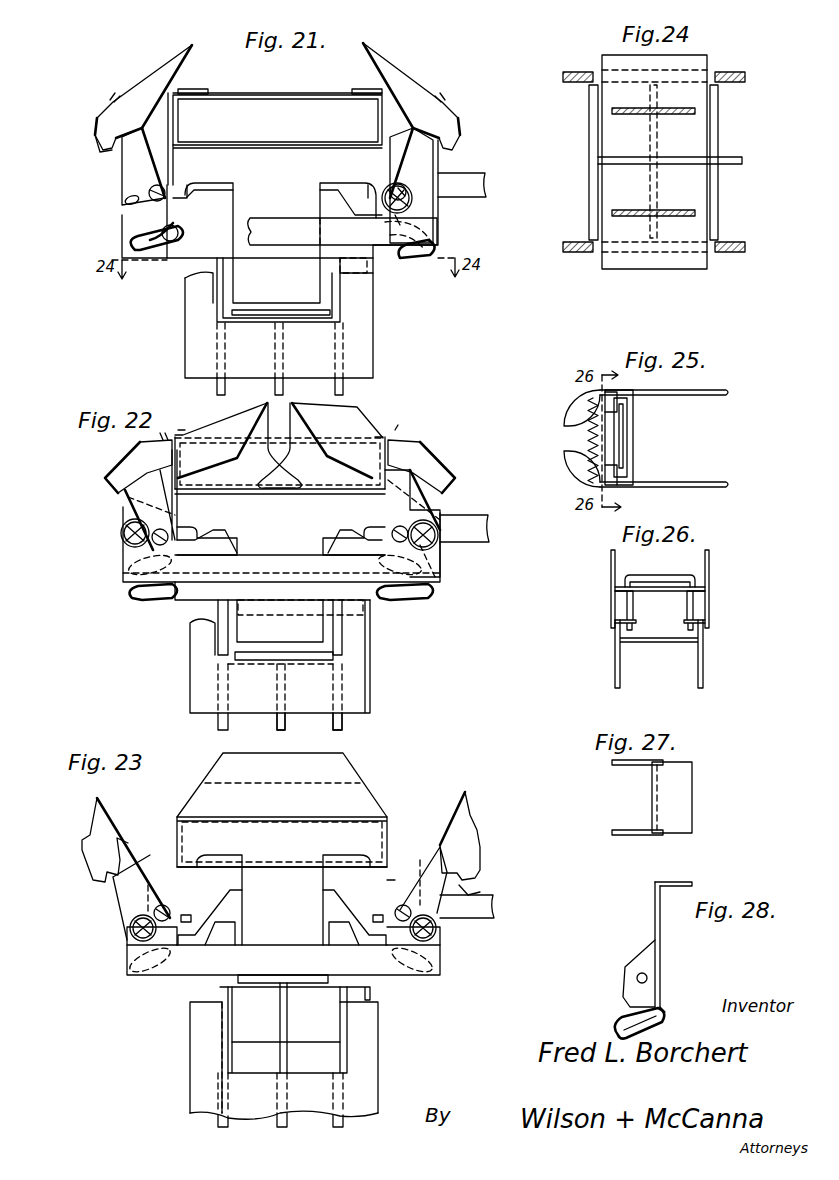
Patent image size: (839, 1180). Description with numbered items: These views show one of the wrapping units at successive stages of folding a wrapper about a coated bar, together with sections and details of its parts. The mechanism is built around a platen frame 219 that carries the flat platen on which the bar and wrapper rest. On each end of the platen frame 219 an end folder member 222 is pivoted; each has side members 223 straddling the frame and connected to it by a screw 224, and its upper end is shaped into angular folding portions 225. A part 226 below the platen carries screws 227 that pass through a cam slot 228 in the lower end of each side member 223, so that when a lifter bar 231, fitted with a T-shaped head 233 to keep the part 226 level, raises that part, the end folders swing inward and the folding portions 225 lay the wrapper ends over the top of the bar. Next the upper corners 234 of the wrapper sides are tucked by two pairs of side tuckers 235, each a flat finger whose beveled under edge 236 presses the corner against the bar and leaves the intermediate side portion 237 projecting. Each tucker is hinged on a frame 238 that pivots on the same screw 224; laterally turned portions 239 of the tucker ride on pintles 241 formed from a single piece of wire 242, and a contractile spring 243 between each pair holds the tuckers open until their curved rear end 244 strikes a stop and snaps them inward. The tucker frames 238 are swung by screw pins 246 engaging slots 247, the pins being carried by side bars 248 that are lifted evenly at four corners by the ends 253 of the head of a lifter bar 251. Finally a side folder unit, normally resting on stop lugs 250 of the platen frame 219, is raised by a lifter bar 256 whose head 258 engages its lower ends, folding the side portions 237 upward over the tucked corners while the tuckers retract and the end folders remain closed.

In FIG. 21, the platen frame 219 is at (472, 190).
In FIG. 22, the platen frame 219 is at (462, 525).
In FIG. 23, the platen frame 219 is at (480, 900).
In FIG. 22, the end folder member 222 is at (280, 466).
In FIG. 23, the end folder member 222 is at (176, 818).
In FIG. 27, the end folder member 222 is at (652, 787).
In FIG. 28, the end folder member 222 is at (655, 903).
In FIG. 27, the side members 223 is at (625, 836).
In FIG. 28, the side members 223 is at (635, 955).
In FIG. 21, the screw 224 is at (148, 190).
In FIG. 21, the angular folding portions 225 is at (200, 92).
In FIG. 27, the angular folding portions 225 is at (693, 805).
In FIG. 28, the angular folding portions 225 is at (660, 896).
In FIG. 21, the part 226 is at (190, 264).
In FIG. 22, the part 226 is at (162, 597).
In FIG. 21, the screws 227 is at (300, 204).
In FIG. 21, the cam slot 228 is at (130, 240).
In FIG. 28, the cam slot 228 is at (622, 1008).
In FIG. 21, the lifter bar 231 is at (230, 290).
In FIG. 22, the lifter bar 231 is at (230, 728).
In FIG. 23, the lifter bar 231 is at (235, 1027).
In FIG. 24, the lifter bar 231 is at (588, 133).
In FIG. 22, the T-shaped head 233 is at (225, 615).
In FIG. 23, the T-shaped head 233 is at (372, 993).
In FIG. 24, the T-shaped head 233 is at (752, 154).
In FIG. 22, the upper corners 234 is at (215, 412).
In FIG. 21, the side tuckers 235 is at (150, 92).
In FIG. 22, the side tuckers 235 is at (195, 463).
In FIG. 23, the side tuckers 235 is at (110, 828).
In FIG. 25, the side tuckers 235 is at (695, 395).
In FIG. 26, the side tuckers 235 is at (611, 575).
In FIG. 21, the under edge 236 is at (185, 61).
In FIG. 22, the under edge 236 is at (342, 463).
In FIG. 22, the intermediate side portion 237 is at (308, 490).
In FIG. 23, the intermediate side portion 237 is at (330, 763).
In FIG. 21, the frame 238 is at (130, 163).
In FIG. 22, the frame 238 is at (130, 503).
In FIG. 23, the frame 238 is at (125, 905).
In FIG. 26, the frame 238 is at (620, 662).
In FIG. 25, the laterally turned portions 239 is at (622, 415).
In FIG. 26, the laterally turned portions 239 is at (612, 606).
In FIG. 26, the pintles 241 is at (690, 610).
In FIG. 25, the piece of wire 242 is at (628, 436).
In FIG. 26, the piece of wire 242 is at (646, 575).
In FIG. 25, the contractile spring 243 is at (586, 435).
In FIG. 21, the curved rear end 244 is at (100, 142).
In FIG. 22, the curved rear end 244 is at (433, 475).
In FIG. 23, the curved rear end 244 is at (470, 870).
In FIG. 25, the curved rear end 244 is at (562, 410).
In FIG. 22, the screw pins 246 is at (122, 532).
In FIG. 21, the slots 247 is at (132, 203).
In FIG. 21, the side bars 248 is at (342, 231).
In FIG. 22, the side bars 248 is at (140, 568).
In FIG. 23, the side bars 248 is at (283, 928).
In FIG. 21, the stop lugs 250 is at (193, 190).
In FIG. 22, the lifter bar 251 is at (346, 728).
In FIG. 23, the ends 253 is at (200, 1003).
In FIG. 24, the ends 253 is at (580, 72).
In FIG. 22, the lifter bar 256 is at (288, 728).
In FIG. 22, the head 258 is at (222, 650).
In FIG. 23, the head 258 is at (313, 984).
In FIG. 24, the head 258 is at (653, 162).